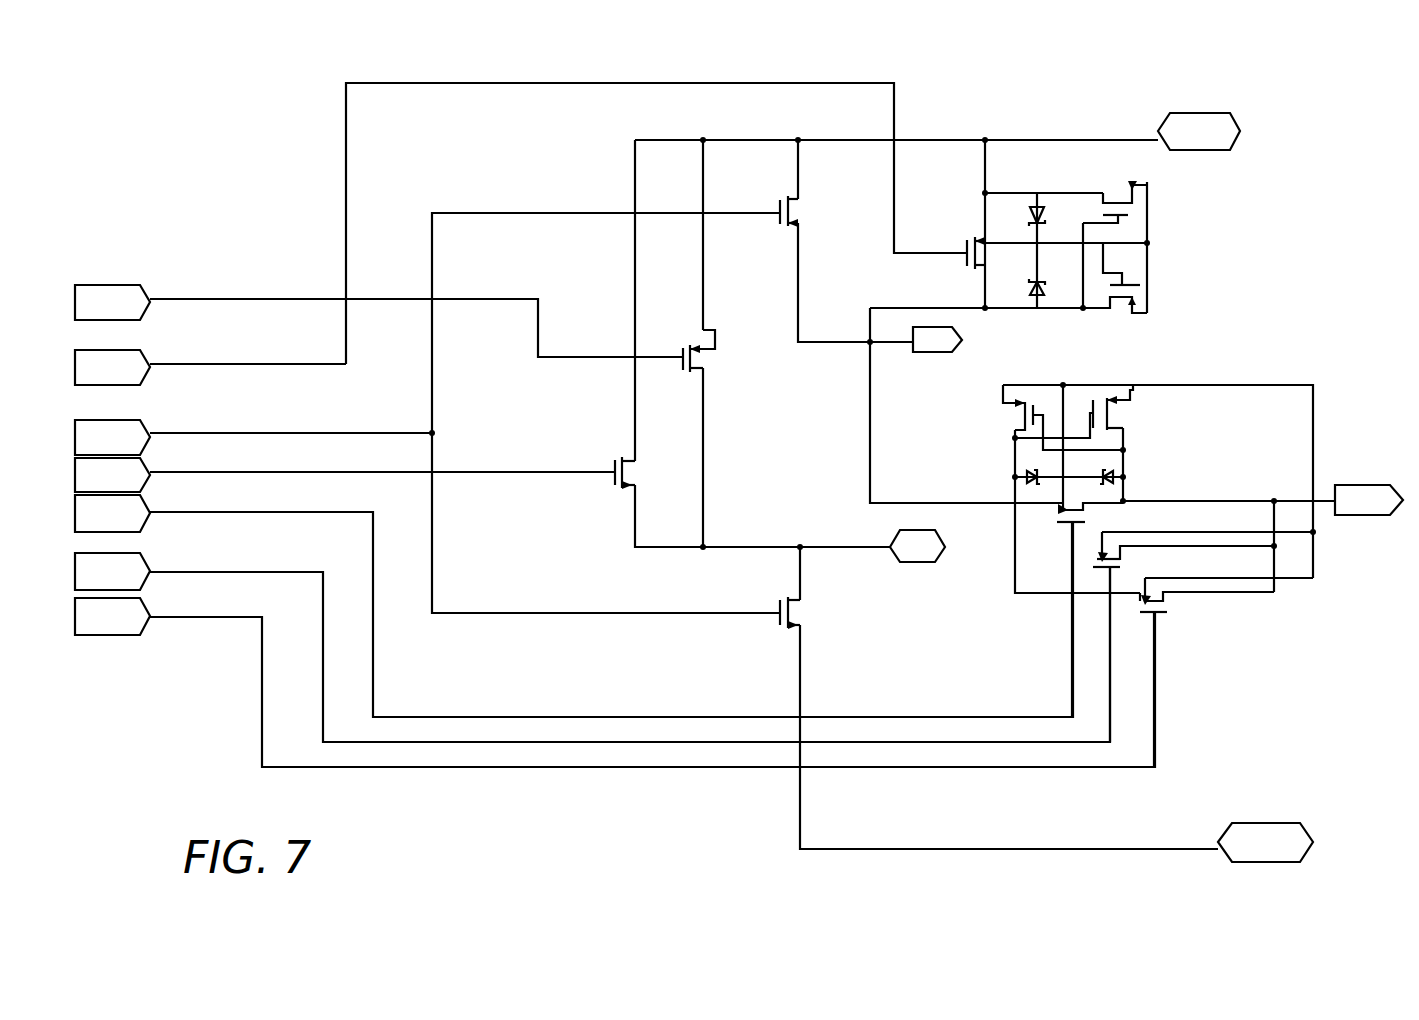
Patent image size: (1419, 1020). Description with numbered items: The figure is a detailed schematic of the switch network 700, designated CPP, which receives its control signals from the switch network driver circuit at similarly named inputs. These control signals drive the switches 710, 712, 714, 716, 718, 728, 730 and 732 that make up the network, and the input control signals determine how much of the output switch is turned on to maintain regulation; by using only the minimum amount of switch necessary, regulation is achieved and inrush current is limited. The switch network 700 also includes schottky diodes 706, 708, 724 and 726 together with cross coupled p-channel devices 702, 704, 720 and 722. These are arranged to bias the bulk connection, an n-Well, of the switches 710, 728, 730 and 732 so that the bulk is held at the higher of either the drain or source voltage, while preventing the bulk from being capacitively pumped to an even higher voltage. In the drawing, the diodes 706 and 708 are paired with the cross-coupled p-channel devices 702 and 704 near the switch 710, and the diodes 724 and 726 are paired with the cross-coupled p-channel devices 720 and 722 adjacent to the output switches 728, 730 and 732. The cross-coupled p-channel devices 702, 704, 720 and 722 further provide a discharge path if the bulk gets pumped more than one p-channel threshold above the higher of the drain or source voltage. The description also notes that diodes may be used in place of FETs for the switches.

The switch network 700 is at (846, 47).
The cross coupled p-channel device 702 is at (1150, 180).
The cross coupled p-channel device 704 is at (1149, 293).
The schottky diode 706 is at (1028, 215).
The schottky diode 708 is at (1030, 295).
The switch 710 is at (962, 266).
The switch 712 is at (780, 200).
The switch 714 is at (708, 372).
The switch 716 is at (617, 490).
The switch 718 is at (805, 612).
The cross coupled p-channel device 720 is at (1018, 408).
The cross coupled p-channel device 722 is at (1104, 411).
The schottky diode 724 is at (1020, 477).
The schottky diode 726 is at (1125, 476).
The switch 728 is at (1058, 515).
The switch 730 is at (1093, 562).
The switch 732 is at (1160, 618).